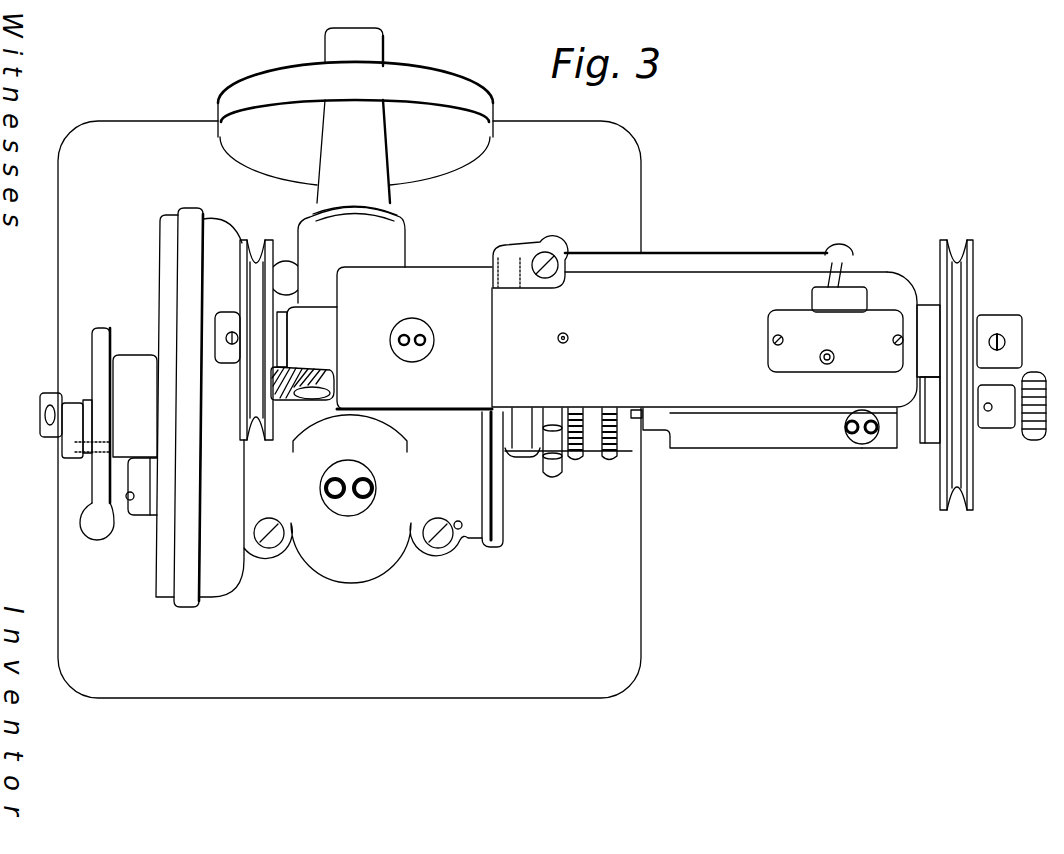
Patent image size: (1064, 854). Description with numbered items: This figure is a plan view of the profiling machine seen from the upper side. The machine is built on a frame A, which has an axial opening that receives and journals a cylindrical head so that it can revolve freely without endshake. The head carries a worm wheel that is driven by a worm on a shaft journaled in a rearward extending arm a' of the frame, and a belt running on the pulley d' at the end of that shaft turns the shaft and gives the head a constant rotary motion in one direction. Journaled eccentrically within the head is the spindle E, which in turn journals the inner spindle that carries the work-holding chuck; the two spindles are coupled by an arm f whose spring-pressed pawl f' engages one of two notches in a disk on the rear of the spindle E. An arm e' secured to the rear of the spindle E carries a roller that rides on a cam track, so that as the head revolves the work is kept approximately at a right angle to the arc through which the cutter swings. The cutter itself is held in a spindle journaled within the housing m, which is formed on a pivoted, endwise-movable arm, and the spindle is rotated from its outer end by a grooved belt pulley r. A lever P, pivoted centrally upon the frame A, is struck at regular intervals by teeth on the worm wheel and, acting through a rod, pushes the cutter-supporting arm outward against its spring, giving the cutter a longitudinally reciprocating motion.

The pulley d' is at (355, 106).
The arm of the frame a' is at (462, 295).
The frame A is at (601, 407).
The lever P is at (296, 372).
The spindle E is at (135, 406).
The arm e' is at (139, 509).
The arm f is at (60, 431).
The spring-pressed pawl f' is at (67, 434).
The housing m is at (733, 442).
The pulley r is at (957, 468).